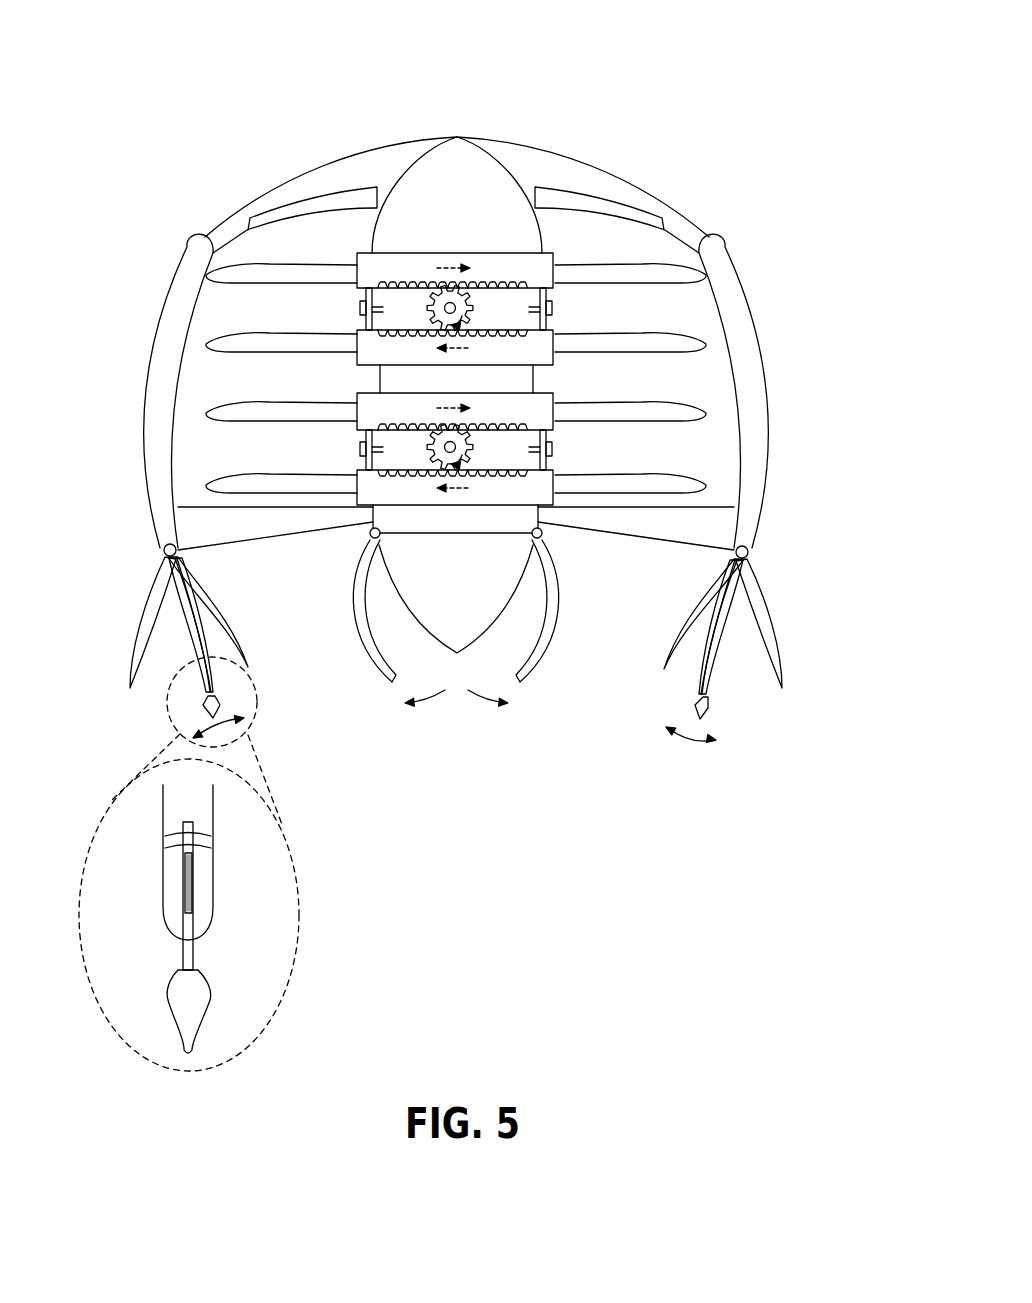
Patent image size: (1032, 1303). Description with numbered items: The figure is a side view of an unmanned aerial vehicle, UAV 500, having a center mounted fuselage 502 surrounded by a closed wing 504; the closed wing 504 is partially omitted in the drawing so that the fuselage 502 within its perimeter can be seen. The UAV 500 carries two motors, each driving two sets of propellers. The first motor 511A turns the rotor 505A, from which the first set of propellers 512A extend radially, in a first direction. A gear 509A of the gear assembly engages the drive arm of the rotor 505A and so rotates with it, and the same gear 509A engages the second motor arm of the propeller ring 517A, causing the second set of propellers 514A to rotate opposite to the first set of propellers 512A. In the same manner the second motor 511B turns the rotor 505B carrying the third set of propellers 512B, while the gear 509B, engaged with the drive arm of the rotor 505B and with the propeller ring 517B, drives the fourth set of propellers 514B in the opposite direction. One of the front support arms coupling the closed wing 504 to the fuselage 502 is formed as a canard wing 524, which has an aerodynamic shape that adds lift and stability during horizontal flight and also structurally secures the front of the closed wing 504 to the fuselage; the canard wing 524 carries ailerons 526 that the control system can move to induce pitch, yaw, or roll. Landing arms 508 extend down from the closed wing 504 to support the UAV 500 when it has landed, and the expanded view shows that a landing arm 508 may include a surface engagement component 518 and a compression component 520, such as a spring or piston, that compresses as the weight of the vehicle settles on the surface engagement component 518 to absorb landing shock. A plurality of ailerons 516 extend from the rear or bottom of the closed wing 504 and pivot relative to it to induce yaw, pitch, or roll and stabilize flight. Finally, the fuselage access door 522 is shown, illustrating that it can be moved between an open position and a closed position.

The UAV 500 is at (748, 142).
The fuselage 502 is at (455, 176).
The closed wing 504 is at (748, 366).
The rotor 505A is at (378, 492).
The rotor 505B is at (358, 353).
The landing arms 508 is at (712, 706).
The gear 509A is at (438, 447).
The gear 509B is at (444, 303).
The first motor 511A is at (553, 512).
The second motor 511B is at (552, 366).
The first set of propellers 512A is at (640, 484).
The third set of propellers 512B is at (618, 347).
The second set of propellers 514A is at (625, 412).
The fourth set of propellers 514B is at (608, 278).
The ailerons 516 is at (145, 612).
The propeller ring 517A is at (360, 398).
The propeller ring 517B is at (528, 262).
The surface engagement component 518 is at (192, 1010).
The compression component 520 is at (185, 876).
The fuselage access door 522 is at (557, 608).
The canard wing 524 is at (520, 168).
The ailerons 526 is at (330, 200).